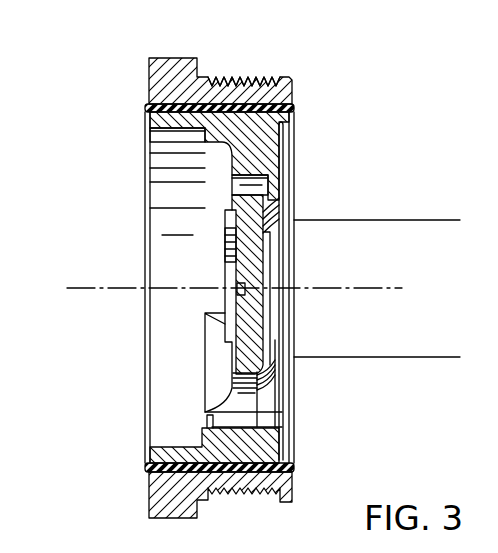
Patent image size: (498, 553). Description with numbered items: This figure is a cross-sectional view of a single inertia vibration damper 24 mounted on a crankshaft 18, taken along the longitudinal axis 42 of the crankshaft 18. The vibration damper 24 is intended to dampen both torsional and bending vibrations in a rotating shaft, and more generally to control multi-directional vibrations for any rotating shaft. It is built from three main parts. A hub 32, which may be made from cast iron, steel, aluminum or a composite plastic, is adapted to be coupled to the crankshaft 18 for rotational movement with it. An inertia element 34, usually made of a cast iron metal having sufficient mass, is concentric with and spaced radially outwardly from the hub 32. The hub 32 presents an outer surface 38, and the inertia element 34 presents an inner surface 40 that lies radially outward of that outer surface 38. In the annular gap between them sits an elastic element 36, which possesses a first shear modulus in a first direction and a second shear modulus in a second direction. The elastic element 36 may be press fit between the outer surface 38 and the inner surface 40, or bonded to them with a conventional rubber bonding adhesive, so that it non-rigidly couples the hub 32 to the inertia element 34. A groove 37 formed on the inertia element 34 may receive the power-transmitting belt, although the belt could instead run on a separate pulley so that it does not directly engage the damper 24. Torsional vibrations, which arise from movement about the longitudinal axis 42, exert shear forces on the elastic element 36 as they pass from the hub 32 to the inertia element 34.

The crankshaft 18 is at (395, 227).
The single inertia vibration damper 24 is at (311, 408).
The hub 32 is at (262, 145).
The inertia element 34 is at (163, 73).
The elastic element 36 is at (285, 103).
The groove 37 is at (233, 83).
The outer surface 38 is at (160, 113).
The inner surface 40 is at (150, 100).
The longitudinal axis 42 is at (82, 288).